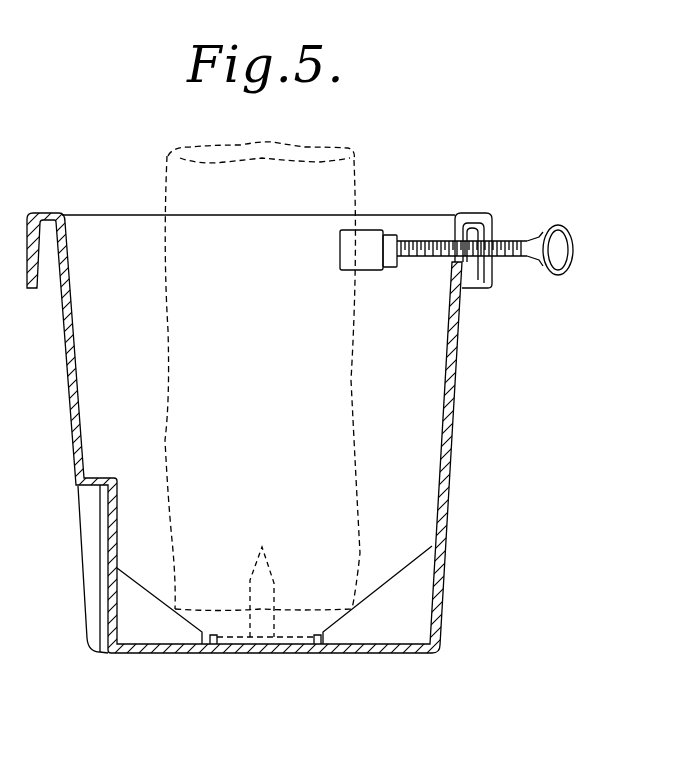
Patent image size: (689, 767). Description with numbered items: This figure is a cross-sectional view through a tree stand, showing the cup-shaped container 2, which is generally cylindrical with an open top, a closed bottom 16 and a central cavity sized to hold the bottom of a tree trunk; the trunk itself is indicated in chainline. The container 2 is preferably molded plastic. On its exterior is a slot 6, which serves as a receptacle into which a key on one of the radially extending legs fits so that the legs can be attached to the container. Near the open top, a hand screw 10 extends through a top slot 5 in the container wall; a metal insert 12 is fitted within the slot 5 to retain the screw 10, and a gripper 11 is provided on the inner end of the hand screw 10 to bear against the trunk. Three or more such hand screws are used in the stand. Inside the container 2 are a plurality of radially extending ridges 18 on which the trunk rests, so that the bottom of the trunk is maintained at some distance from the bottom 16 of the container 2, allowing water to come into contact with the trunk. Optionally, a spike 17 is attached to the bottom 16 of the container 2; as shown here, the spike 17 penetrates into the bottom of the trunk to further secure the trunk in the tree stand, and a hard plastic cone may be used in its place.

The container 2 is at (452, 430).
The top slot 5 is at (468, 213).
The slot 6 is at (107, 637).
The hand screw 10 is at (514, 258).
The gripper 11 is at (364, 236).
The metal insert 12 is at (493, 237).
The bottom 16 is at (288, 642).
The spike 17 is at (250, 572).
The radially extending ridges 18 is at (158, 600).